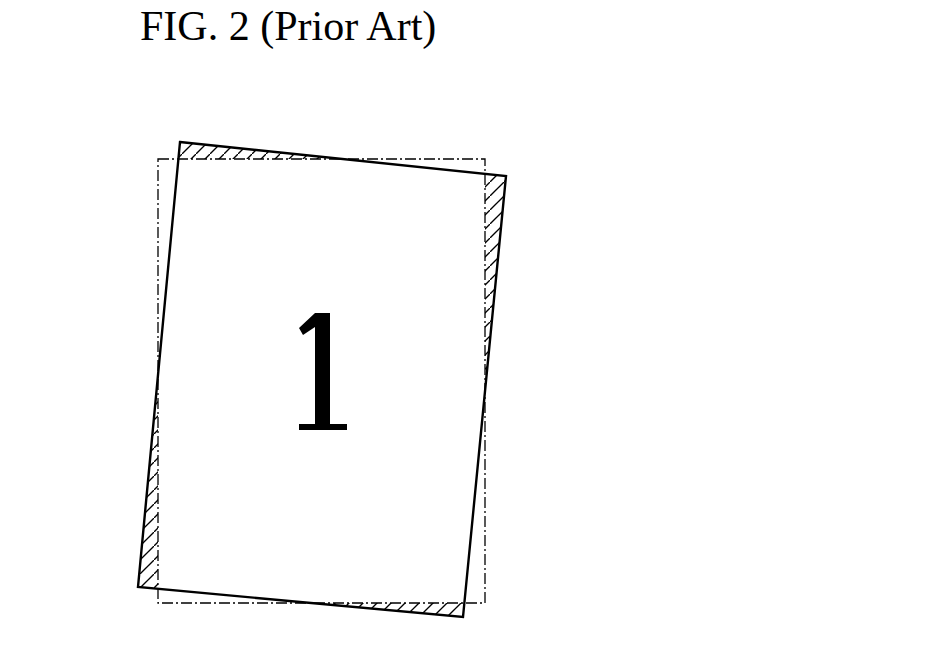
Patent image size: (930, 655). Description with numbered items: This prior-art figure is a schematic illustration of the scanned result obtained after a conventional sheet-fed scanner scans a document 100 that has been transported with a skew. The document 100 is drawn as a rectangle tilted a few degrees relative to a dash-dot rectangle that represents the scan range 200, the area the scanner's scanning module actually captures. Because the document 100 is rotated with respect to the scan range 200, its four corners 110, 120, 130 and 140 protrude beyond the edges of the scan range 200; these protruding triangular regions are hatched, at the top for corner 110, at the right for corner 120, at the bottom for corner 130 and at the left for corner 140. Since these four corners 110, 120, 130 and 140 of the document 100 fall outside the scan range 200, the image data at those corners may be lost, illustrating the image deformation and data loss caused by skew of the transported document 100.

The document 100 is at (498, 280).
The scan range 200 is at (458, 157).
The corner 110 is at (204, 140).
The corner 120 is at (507, 187).
The corner 130 is at (465, 615).
The corner 140 is at (148, 567).